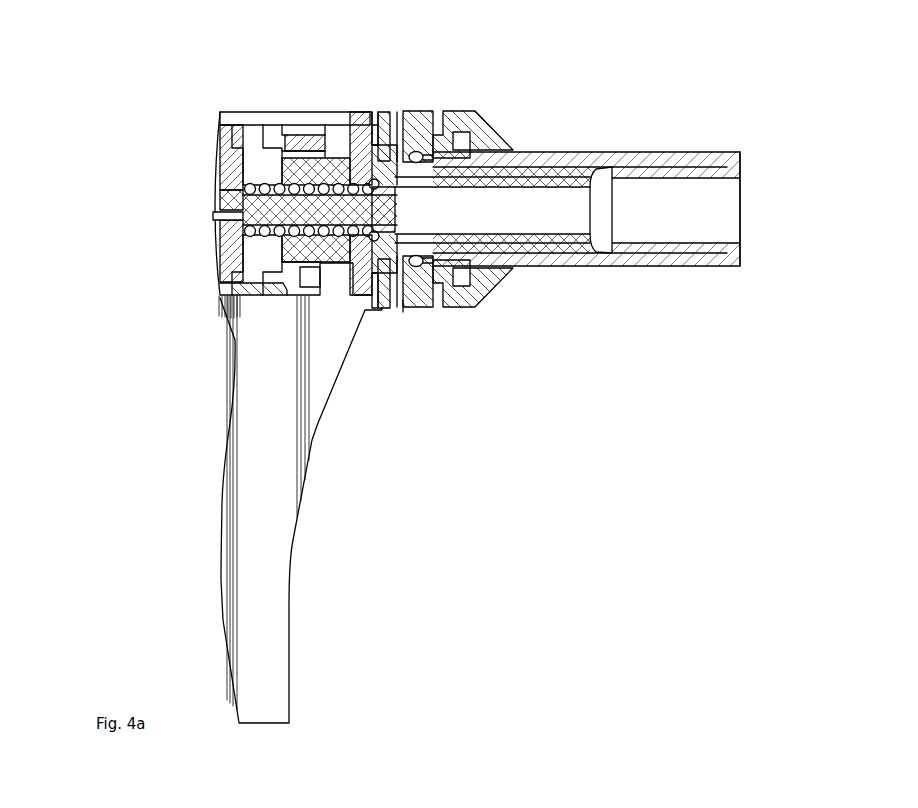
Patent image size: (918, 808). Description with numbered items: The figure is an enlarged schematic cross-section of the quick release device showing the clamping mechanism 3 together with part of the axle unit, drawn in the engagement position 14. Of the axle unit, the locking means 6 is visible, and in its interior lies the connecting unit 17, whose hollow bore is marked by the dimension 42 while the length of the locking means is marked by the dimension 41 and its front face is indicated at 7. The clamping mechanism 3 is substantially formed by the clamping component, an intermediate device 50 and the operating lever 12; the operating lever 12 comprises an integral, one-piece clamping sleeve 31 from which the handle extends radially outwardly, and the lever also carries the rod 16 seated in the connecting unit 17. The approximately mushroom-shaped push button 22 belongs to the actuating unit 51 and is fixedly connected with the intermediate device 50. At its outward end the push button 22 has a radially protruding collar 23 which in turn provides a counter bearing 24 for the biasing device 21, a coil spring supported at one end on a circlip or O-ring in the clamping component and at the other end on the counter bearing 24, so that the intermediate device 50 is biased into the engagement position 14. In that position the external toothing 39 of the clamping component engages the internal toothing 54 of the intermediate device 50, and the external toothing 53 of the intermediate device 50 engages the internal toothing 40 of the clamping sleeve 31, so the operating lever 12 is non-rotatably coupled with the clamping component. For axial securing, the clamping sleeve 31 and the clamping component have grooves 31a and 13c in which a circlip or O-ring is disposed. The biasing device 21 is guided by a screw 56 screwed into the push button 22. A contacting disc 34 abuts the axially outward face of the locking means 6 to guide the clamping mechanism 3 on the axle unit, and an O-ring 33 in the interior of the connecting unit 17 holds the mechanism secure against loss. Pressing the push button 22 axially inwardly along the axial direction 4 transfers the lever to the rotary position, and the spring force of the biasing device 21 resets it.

The clamping mechanism 3 is at (369, 334).
The axial direction 4 is at (200, 427).
The locking means 6 is at (426, 118).
The nut front face 7 is at (430, 338).
The operating lever 12 is at (252, 498).
The groove 13c is at (376, 126).
The engagement position 14 is at (207, 98).
The rod 16 is at (573, 180).
The connecting unit 17 is at (541, 270).
The biasing device 21 is at (258, 184).
The push button 22 is at (238, 185).
The collar 23 is at (236, 152).
The counter bearing 24 is at (258, 263).
The clamping sleeve 31 is at (238, 112).
The groove 31a is at (377, 118).
The O-ring 33 is at (418, 166).
The contacting disc 34 is at (389, 118).
The external toothing 39 is at (244, 285).
The internal toothing 40 is at (283, 291).
The length 41 is at (433, 310).
The bore diameter 42 is at (720, 169).
The intermediate device 50 is at (216, 190).
The actuating unit 51 is at (218, 225).
The external toothing 53 is at (324, 150).
The internal toothing 54 is at (333, 158).
The screw 56 is at (389, 214).